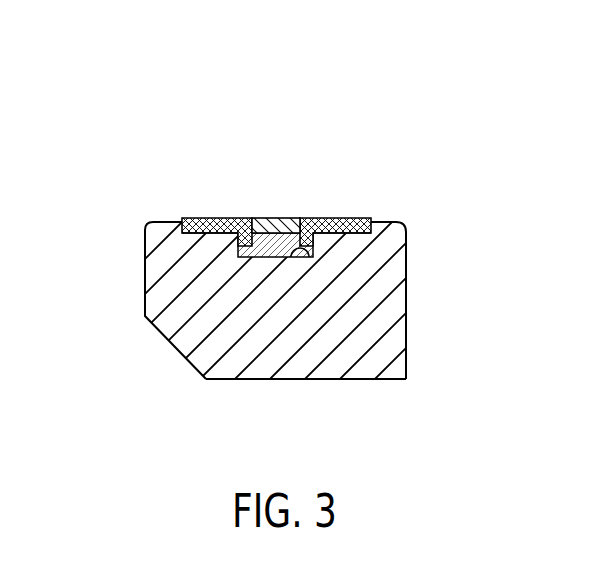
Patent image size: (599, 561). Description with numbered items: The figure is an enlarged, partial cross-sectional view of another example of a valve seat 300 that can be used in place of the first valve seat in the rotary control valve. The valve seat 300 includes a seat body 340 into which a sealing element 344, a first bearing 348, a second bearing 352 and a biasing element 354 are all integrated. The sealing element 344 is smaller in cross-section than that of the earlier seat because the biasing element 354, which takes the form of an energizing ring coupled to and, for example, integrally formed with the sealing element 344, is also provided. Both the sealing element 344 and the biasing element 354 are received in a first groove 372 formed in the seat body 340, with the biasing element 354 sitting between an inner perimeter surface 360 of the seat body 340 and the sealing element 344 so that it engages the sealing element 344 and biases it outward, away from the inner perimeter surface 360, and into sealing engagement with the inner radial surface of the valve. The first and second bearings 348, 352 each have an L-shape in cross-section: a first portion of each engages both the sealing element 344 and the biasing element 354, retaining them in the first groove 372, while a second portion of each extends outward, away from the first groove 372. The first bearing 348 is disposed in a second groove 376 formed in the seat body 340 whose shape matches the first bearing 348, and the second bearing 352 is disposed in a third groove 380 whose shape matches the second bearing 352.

The valve seat 300 is at (405, 90).
The seat body 340 is at (266, 393).
The sealing element 344 is at (275, 204).
The first bearing 348 is at (205, 204).
The second bearing 352 is at (332, 204).
The biasing element 354 is at (299, 276).
The inner perimeter surface 360 is at (292, 380).
The first groove 372 is at (255, 264).
The second groove 376 is at (197, 233).
The third groove 380 is at (360, 233).